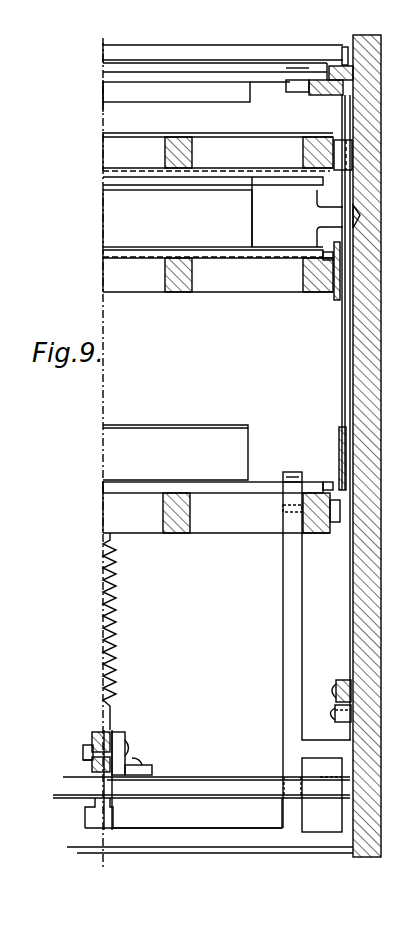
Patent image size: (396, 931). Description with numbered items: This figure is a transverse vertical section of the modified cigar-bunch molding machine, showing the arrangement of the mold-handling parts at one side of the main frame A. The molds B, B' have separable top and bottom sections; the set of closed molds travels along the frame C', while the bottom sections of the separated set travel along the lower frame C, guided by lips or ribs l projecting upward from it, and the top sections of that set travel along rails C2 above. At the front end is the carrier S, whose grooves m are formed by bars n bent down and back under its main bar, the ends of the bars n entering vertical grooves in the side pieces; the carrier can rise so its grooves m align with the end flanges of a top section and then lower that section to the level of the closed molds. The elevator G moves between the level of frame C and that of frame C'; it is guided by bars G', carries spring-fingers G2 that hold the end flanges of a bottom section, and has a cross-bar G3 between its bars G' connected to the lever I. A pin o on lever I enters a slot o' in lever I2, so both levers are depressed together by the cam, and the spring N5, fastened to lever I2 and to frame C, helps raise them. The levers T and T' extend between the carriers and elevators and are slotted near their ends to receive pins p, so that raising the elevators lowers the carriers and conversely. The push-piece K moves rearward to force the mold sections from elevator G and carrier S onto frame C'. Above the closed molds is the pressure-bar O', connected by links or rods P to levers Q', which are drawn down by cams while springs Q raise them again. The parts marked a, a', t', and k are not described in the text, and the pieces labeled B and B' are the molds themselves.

The wall A is at (365, 446).
The carrier S is at (223, 54).
The pin t' is at (336, 44).
The groove m is at (328, 68).
The rail C2 is at (326, 98).
The bar n is at (297, 87).
The bar a' is at (270, 89).
The mold B' is at (213, 136).
The pressure-bar O' is at (227, 151).
The mold B is at (213, 328).
The push-piece K is at (315, 218).
The wedge k is at (358, 232).
The frame C' is at (221, 271).
The lever T' is at (328, 292).
The lever T is at (329, 292).
The plate a is at (213, 474).
The frame C is at (216, 507).
The spring-finger G2 is at (291, 472).
The elevator G is at (289, 472).
The lip or rib l is at (330, 484).
The pin p is at (332, 523).
The link or rod P is at (352, 590).
The bar G' is at (282, 655).
The cross-bar G3 is at (203, 805).
The spring N5 is at (120, 681).
The lever I is at (92, 737).
The lever I2 is at (114, 734).
The pin o is at (83, 751).
The slot o' is at (80, 765).
The lever Q' is at (332, 687).
The spring Q is at (330, 710).